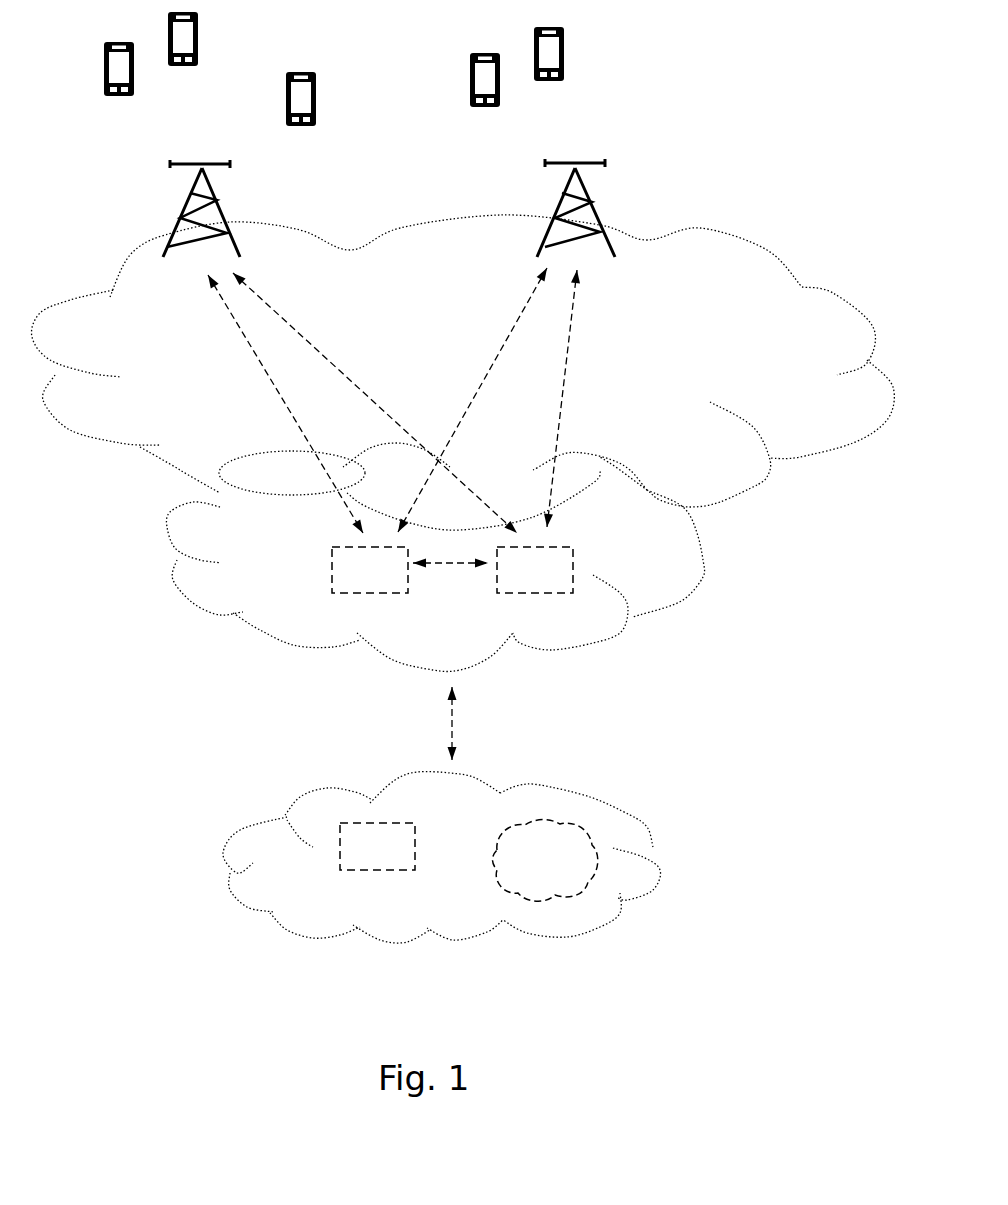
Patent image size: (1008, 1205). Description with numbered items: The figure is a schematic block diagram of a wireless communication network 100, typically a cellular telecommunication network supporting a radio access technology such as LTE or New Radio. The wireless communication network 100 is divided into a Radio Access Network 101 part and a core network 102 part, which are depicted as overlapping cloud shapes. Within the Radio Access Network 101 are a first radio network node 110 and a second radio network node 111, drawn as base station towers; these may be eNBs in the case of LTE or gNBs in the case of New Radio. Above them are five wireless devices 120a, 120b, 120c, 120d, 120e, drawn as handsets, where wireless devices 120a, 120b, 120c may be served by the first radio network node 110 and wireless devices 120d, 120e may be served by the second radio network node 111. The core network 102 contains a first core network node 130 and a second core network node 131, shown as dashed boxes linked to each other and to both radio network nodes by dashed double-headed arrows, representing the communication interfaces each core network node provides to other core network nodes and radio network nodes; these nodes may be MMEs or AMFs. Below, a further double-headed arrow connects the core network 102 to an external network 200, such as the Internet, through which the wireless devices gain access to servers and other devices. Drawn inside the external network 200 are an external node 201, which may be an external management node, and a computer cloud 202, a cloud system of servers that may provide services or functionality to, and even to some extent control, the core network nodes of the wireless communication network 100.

The wireless communication network 100 is at (208, 698).
The Radio Access Network (RAN) 101 is at (792, 485).
The core network (CN) 102 is at (757, 553).
The first radio network node 110 is at (180, 213).
The second radio network node 111 is at (607, 193).
The wireless device 120a is at (122, 95).
The wireless device 120b is at (185, 68).
The wireless device 120c is at (303, 128).
The wireless device 120d is at (487, 108).
The wireless device 120e is at (553, 82).
The first core network node 130 is at (332, 573).
The second core network node 131 is at (493, 570).
The external network 200 is at (660, 863).
The external node 201 is at (362, 870).
The computer cloud 202 is at (497, 853).